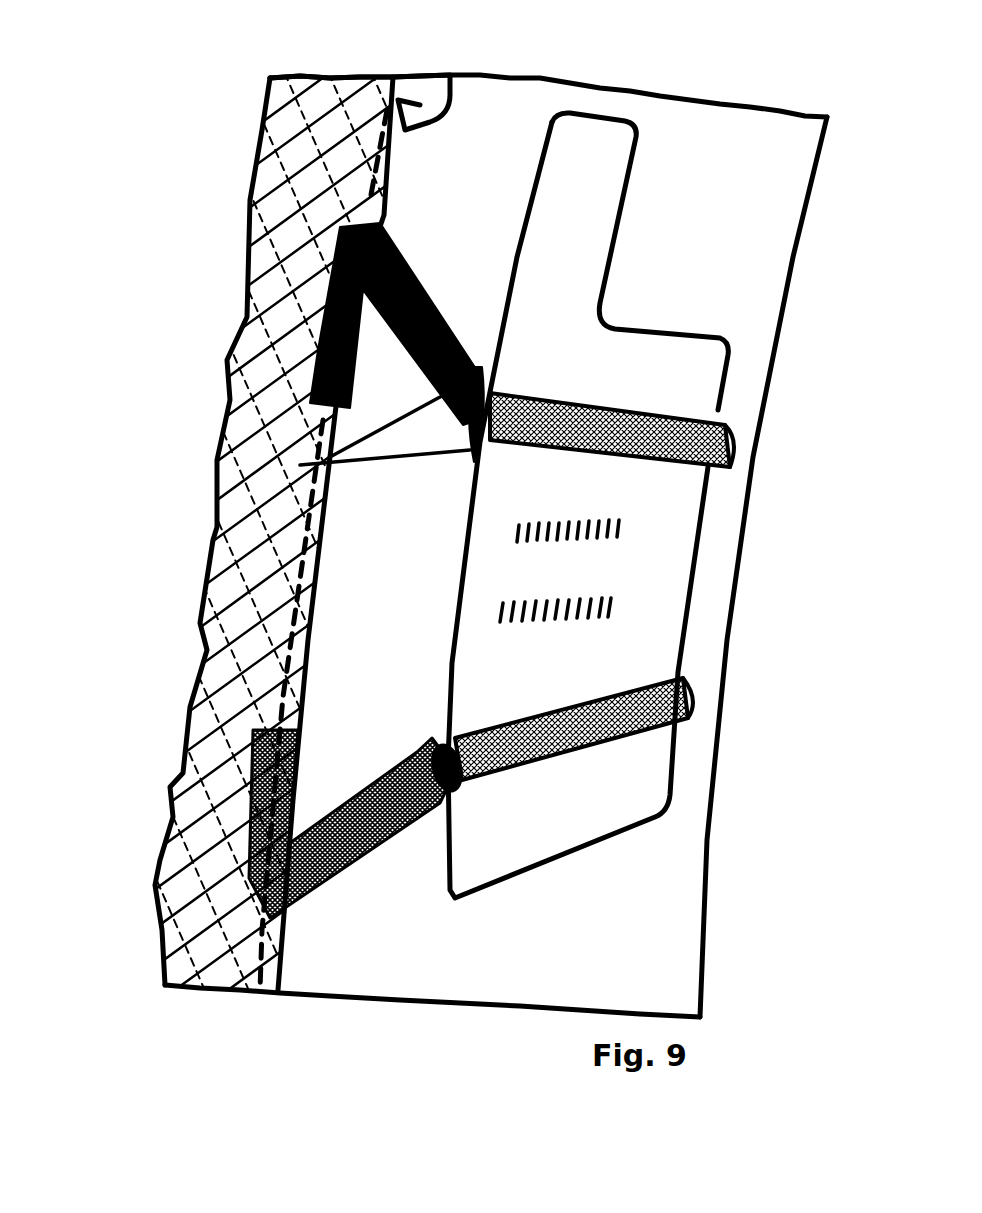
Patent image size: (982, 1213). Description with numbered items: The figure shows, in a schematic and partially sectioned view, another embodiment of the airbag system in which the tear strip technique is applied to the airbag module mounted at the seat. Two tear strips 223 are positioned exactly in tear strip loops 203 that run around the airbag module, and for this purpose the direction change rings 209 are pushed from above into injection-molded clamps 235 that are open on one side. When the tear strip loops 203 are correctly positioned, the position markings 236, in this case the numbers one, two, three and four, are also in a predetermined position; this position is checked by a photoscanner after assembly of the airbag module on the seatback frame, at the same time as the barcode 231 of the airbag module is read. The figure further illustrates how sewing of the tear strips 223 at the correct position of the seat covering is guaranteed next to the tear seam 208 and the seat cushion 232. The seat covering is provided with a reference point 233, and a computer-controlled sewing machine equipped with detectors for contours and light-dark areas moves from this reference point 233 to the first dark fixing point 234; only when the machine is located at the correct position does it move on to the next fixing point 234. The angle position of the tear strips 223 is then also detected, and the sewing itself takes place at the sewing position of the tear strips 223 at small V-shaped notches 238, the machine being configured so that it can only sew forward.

The tear strip loop 203 is at (597, 410).
The tear seam 208 is at (363, 77).
The direction change ring 209 is at (330, 457).
The tear strips 223 is at (262, 300).
The barcode 231 is at (588, 505).
The seat cushion 232 is at (333, 950).
The reference point 233 is at (450, 77).
The fixing points 234 is at (335, 360).
The clamp 235 is at (490, 380).
The position markings 236 is at (462, 748).
The V-shaped notches 238 is at (340, 410).